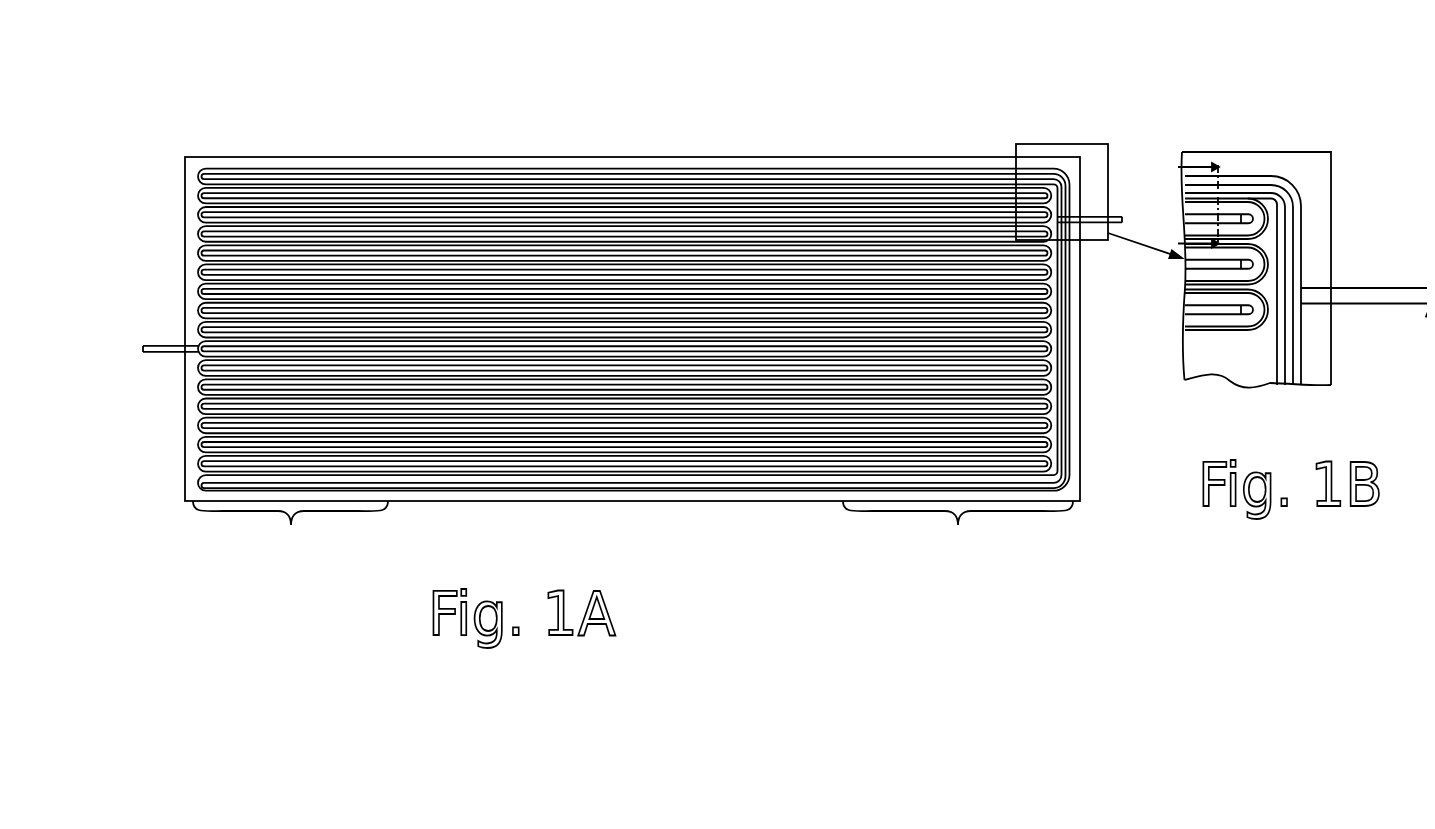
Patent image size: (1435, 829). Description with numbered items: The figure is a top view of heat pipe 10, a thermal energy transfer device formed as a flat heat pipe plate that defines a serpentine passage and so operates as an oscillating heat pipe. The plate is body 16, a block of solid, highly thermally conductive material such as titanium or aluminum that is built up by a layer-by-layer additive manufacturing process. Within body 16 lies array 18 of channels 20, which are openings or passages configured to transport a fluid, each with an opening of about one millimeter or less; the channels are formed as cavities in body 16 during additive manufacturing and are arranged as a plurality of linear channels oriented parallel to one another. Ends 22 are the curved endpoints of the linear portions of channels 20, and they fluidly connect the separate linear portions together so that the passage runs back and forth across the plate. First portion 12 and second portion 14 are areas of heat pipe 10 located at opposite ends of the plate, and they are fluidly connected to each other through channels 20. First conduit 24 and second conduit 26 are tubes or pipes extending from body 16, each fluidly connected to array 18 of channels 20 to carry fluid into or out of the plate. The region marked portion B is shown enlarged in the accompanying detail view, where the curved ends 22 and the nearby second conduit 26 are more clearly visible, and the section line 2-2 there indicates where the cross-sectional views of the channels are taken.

In FIG. 1A, the heat pipe 10 is at (649, 297).
In FIG. 1A, the first portion 12 is at (290, 530).
In FIG. 1A, the second portion 14 is at (958, 530).
In FIG. 1A, the body 16 is at (242, 148).
In FIG. 1A, the array 18 is at (603, 213).
In FIG. 1A, the channels 20 is at (728, 173).
In FIG. 1B, the channels 20 is at (1197, 311).
In FIG. 1A, the ends 22 is at (186, 166).
In FIG. 1B, the ends 22 is at (1233, 210).
In FIG. 1A, the first conduit 24 is at (153, 337).
In FIG. 1A, the second conduit 26 is at (1107, 207).
In FIG. 1B, the second conduit 26 is at (1352, 298).
In FIG. 1A, the portion B is at (1038, 135).
In FIG. 1B, the section line 2-2 is at (1185, 157).